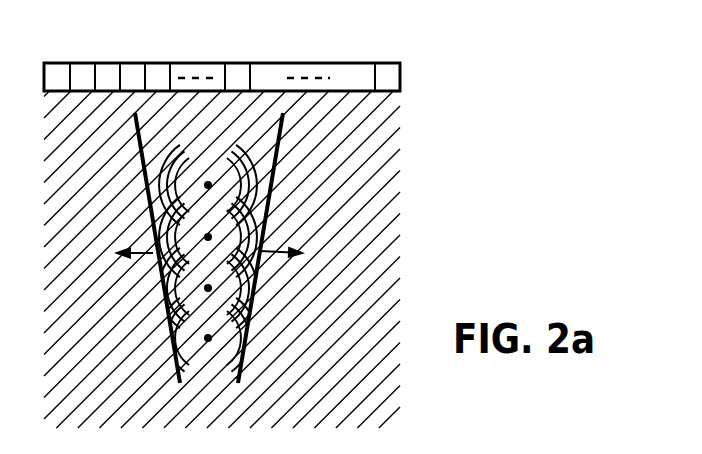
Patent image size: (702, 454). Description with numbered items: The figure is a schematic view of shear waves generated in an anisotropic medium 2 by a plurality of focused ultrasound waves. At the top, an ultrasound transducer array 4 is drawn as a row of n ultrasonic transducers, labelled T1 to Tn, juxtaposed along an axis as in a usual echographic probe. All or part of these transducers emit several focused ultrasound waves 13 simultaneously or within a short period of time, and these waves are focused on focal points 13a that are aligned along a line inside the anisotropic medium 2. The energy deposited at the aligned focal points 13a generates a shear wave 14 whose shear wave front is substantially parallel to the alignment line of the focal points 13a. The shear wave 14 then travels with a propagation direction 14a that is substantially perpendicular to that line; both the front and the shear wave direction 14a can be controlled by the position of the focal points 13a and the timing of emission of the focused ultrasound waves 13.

The anisotropic medium 2 is at (373, 168).
The ultrasound transducer array 4 is at (353, 63).
The focused ultrasound wave 13 is at (170, 219).
The focal point 13a is at (208, 185).
The shear wave 14 is at (147, 212).
The shear wave direction 14a is at (140, 254).